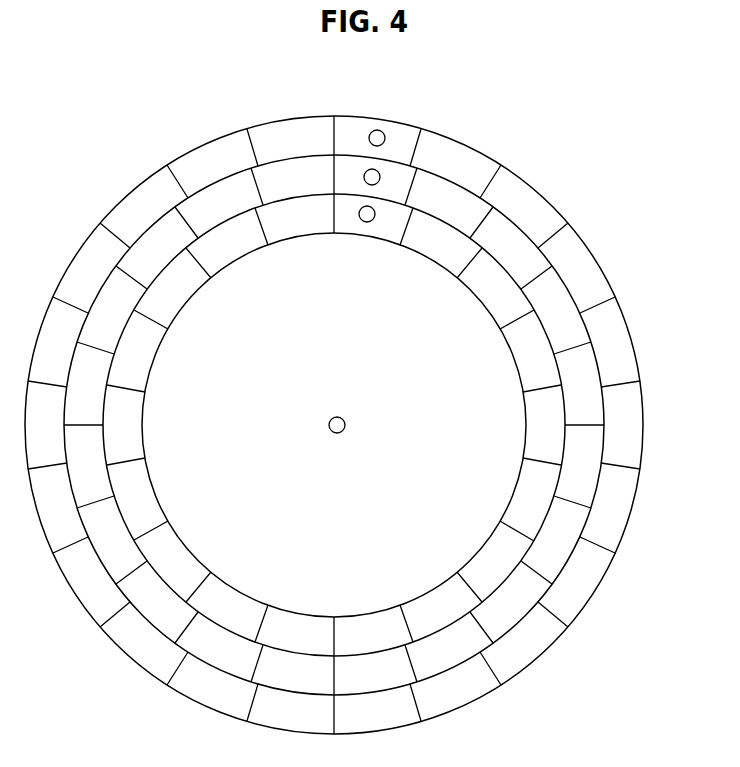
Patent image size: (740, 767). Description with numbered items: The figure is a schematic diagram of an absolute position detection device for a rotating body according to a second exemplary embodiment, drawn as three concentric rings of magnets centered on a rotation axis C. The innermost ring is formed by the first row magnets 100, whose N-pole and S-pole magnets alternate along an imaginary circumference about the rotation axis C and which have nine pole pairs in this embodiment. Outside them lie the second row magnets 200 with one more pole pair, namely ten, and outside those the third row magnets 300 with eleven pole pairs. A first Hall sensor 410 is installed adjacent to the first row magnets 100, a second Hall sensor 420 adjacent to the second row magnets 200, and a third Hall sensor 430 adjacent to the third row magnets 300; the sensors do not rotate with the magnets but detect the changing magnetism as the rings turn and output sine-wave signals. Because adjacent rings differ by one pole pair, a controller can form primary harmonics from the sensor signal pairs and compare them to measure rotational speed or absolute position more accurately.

The first row magnets 100 is at (545, 388).
The second row magnets 200 is at (577, 334).
The third row magnets 300 is at (578, 249).
The first Hall sensor 410 is at (369, 223).
The second Hall sensor 420 is at (379, 173).
The third Hall sensor 430 is at (370, 133).
The rotation axis C is at (343, 418).